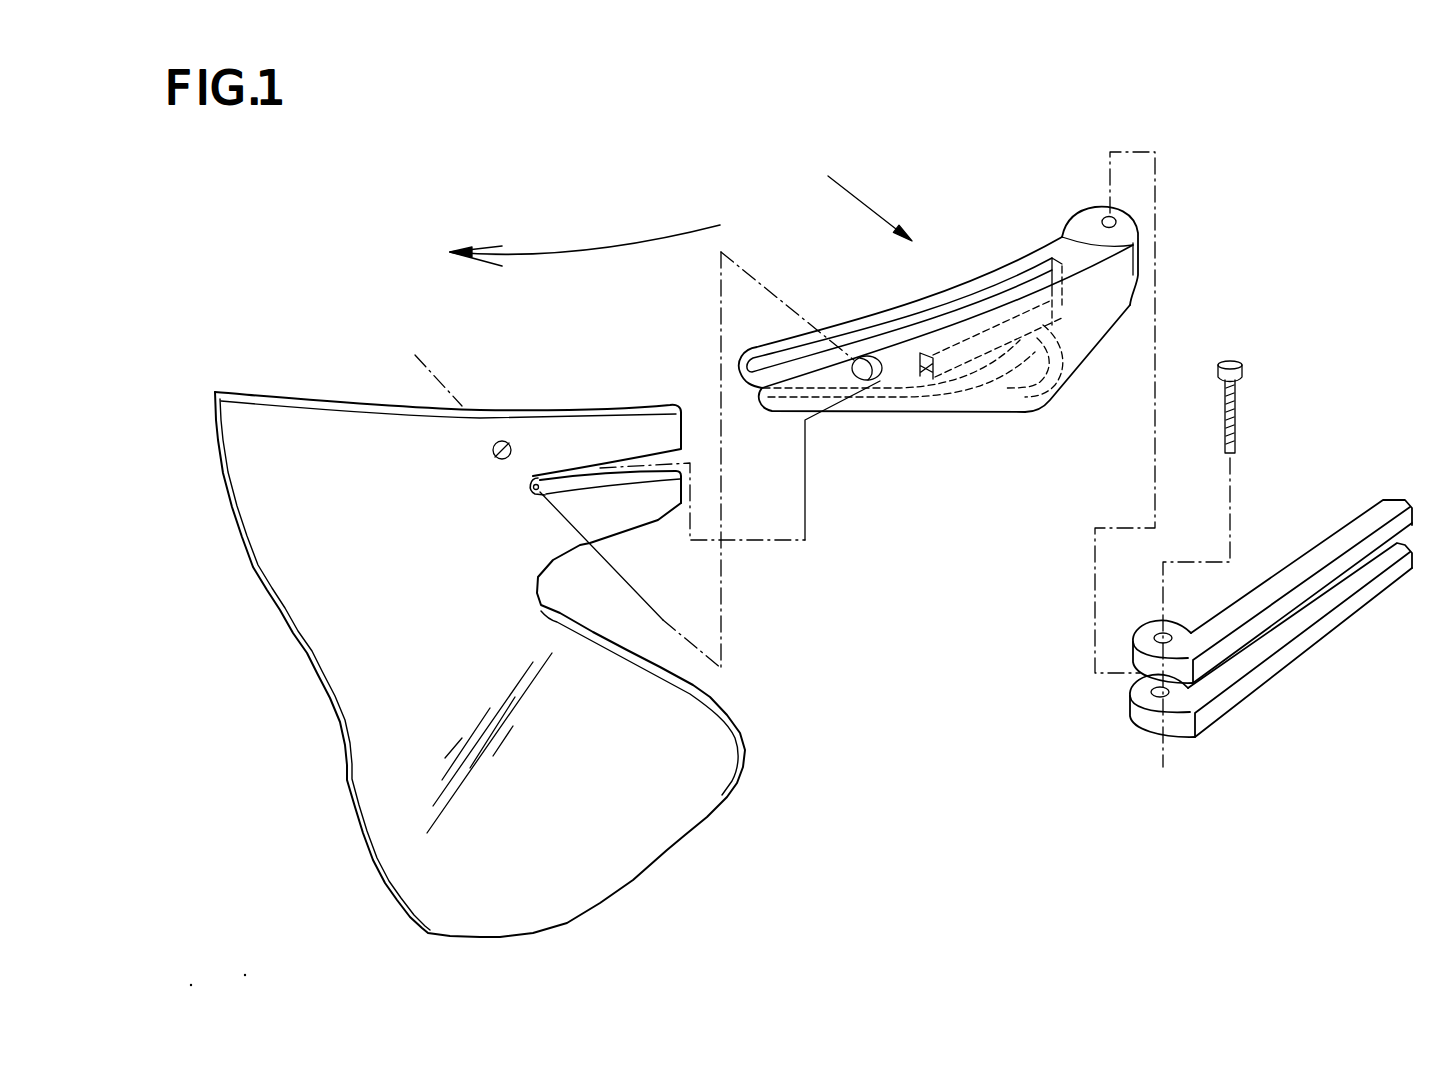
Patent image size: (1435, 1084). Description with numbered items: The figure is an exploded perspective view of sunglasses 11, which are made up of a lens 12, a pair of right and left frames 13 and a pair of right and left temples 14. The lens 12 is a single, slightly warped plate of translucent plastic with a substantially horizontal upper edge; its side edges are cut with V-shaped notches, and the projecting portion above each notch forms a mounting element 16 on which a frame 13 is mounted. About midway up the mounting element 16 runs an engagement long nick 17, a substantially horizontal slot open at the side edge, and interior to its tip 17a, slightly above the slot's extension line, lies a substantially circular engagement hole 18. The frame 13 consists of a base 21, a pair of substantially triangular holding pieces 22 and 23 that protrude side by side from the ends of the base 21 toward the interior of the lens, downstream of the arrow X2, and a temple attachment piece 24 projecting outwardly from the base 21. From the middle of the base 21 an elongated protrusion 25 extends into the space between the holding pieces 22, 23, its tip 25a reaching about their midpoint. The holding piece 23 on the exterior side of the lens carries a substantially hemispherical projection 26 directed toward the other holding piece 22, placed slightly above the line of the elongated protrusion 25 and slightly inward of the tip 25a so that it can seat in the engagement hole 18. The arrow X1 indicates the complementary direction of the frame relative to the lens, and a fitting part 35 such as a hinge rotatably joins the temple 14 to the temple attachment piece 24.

The sunglasses 11 is at (395, 217).
The lens 12 is at (694, 790).
The frame 13 is at (1006, 238).
The temple 14 is at (1324, 517).
The mounting element 16 is at (578, 384).
The engagement long nick 17 is at (630, 477).
The tip of the engagement long nick 17a is at (532, 492).
The engagement hole 18 is at (500, 441).
The base 21 is at (1087, 327).
The holding piece 22 is at (840, 327).
The holding piece 23 is at (1013, 368).
The temple attachment piece 24 is at (1087, 218).
The elongated protrusion 25 is at (967, 353).
The tip of the elongated protrusion 25a is at (923, 378).
The projection 26 is at (868, 355).
The fitting part 35 is at (1228, 360).
The arrow X1 is at (876, 204).
The arrow X2 is at (568, 253).